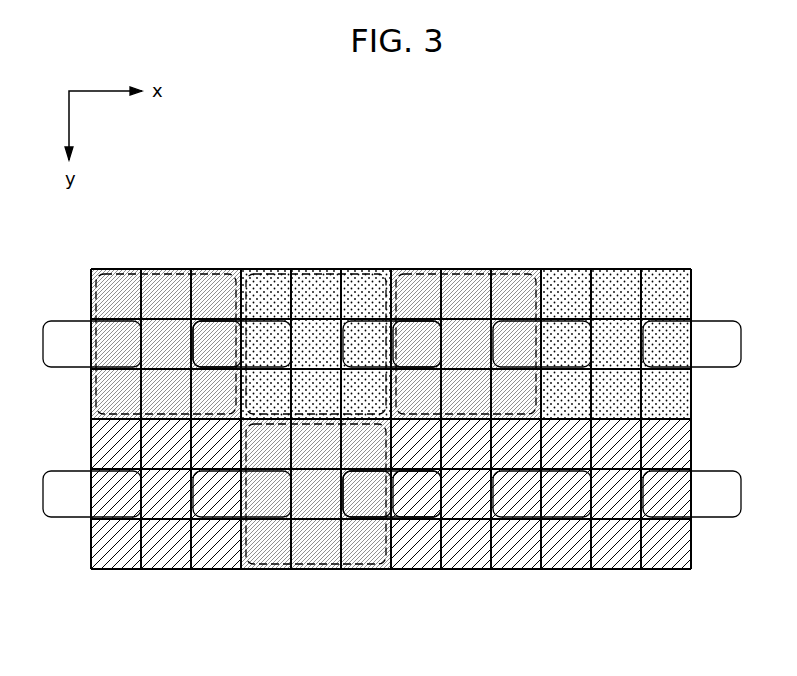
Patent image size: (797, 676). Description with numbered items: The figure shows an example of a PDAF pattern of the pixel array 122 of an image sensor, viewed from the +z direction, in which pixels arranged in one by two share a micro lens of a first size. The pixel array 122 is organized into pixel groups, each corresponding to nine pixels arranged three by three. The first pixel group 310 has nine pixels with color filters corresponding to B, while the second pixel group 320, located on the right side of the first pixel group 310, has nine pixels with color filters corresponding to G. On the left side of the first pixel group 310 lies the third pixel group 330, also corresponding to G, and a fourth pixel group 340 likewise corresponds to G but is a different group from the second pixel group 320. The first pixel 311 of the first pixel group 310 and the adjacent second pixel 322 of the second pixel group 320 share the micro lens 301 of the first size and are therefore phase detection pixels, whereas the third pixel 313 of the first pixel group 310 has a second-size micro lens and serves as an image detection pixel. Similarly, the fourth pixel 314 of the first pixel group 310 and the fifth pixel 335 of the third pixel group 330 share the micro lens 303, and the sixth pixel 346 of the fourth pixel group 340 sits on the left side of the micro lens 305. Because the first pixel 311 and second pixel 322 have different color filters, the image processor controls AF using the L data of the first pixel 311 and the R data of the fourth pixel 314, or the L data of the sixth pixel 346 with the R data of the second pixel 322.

The pixel array 122 is at (660, 187).
The third pixel group 330 is at (97, 282).
The first pixel group 310 is at (258, 273).
The second pixel group 320 is at (518, 273).
The fourth pixel group 340 is at (308, 563).
The micro lens having a first size 303 is at (213, 310).
The fourth pixel 314 is at (268, 310).
The third pixel 313 is at (315, 310).
The first pixel 311 is at (357, 310).
The second pixel 322 is at (405, 318).
The micro lens having a first size 301 is at (432, 320).
The fifth pixel 335 is at (190, 363).
The sixth pixel 346 is at (368, 517).
The micro lens having a first size 305 is at (440, 519).